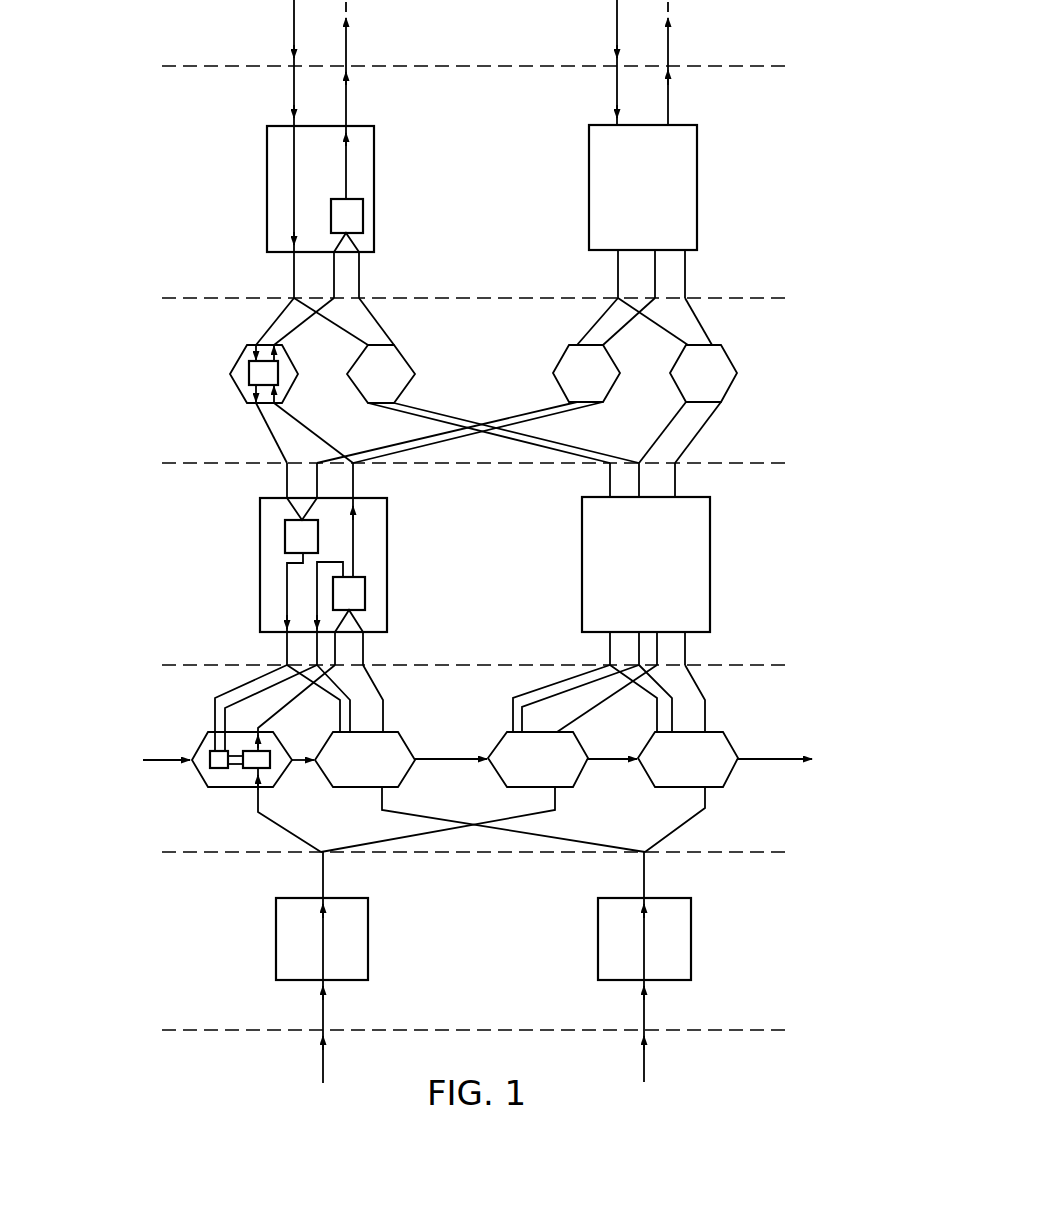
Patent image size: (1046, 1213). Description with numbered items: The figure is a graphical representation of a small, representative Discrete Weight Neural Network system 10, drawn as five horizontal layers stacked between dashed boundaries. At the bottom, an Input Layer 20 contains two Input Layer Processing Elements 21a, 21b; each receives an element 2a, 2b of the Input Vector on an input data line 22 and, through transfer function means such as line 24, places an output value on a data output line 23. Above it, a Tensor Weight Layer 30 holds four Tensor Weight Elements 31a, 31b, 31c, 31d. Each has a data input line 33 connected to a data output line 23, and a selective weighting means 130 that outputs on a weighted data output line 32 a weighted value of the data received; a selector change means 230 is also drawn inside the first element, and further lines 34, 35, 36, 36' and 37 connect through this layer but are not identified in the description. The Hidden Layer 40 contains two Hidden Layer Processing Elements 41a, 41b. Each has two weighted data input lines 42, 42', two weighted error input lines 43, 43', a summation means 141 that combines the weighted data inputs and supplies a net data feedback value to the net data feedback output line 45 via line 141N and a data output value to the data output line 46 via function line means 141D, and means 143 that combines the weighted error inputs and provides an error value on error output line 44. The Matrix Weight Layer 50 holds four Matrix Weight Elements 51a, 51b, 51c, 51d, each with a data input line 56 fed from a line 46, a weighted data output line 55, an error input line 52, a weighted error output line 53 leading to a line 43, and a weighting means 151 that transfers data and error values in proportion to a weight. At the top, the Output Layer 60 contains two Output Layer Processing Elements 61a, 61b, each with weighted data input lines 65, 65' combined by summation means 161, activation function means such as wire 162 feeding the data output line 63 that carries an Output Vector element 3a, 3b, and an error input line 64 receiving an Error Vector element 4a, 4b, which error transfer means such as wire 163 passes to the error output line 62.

The Discrete Weight Neural Network system 10 is at (236, 1033).
The Input Layer 20 is at (755, 937).
The Input Layer Processing Element 21a is at (272, 963).
The Input Layer Processing Element 21b is at (594, 952).
The input data line 22 is at (323, 1007).
The data output line 23 is at (318, 882).
The transfer function means 24 is at (327, 943).
The Input Vector element 2a is at (323, 1070).
The Input Vector element 2b is at (644, 1060).
The Tensor Weight Layer 30 is at (773, 783).
The Tensor Weight Element 31a is at (197, 777).
The Tensor Weight Element 31b is at (416, 745).
The Tensor Weight Element 31c is at (583, 738).
The Tensor Weight Element 31d is at (673, 790).
The weighted data output line 32 is at (300, 697).
The data input line 33 is at (282, 830).
The hidden layer output line to tensor weight element 34 is at (248, 682).
The hidden layer output line to tensor weight element 35 is at (222, 717).
The tensor weight layer input line 36 is at (166, 776).
The tensor weight element interconnect line 36' is at (464, 799).
The tensor weight layer output line 37 is at (775, 755).
The selective weighting means 130 is at (272, 762).
The selector change means 230 is at (222, 769).
The Hidden Layer 40 is at (752, 577).
The Hidden Layer Processing Element 41a is at (257, 582).
The Hidden Layer Processing Element 41b is at (578, 528).
The weighted data input line 42 is at (381, 637).
The weighted data input line 42' is at (412, 648).
The weighted error input line 43 is at (245, 480).
The weighted error input line 43' is at (267, 488).
The error output line 44 is at (287, 637).
The net data feedback output line 45 is at (316, 648).
The data output line 46 is at (358, 480).
The summation means 141 is at (366, 583).
The function line means 141D is at (355, 530).
The net data feedback line 141N is at (333, 558).
The error combining means 143 is at (285, 537).
The Matrix Weight Layer 50 is at (768, 376).
The Matrix Weight Element 51a is at (238, 353).
The Matrix Weight Element 51b is at (412, 358).
The Matrix Weight Element 51c is at (549, 367).
The Matrix Weight Element 51d is at (734, 350).
The error input line 52 is at (273, 316).
The weighted error output line 53 is at (273, 440).
The weighted data output line 55 is at (299, 324).
The data input line 56 is at (310, 428).
The weighting means 151 is at (249, 378).
The Output Layer 60 is at (732, 190).
The Output Layer Processing Element 61a is at (262, 190).
The Output Layer Processing Element 61b is at (585, 191).
The error output line 62 is at (294, 268).
The data output line 63 is at (347, 105).
The error input line 64 is at (294, 96).
The weighted data input line 65 is at (278, 275).
The weighted data input line 65' is at (398, 271).
The summation means 161 is at (364, 216).
The activation function means 162 is at (347, 160).
The error transfer means 163 is at (293, 153).
The Output Vector element 3a is at (347, 35).
The Output Vector element 3b is at (668, 33).
The Error Vector element 4a is at (293, 43).
The Error Vector element 4b is at (617, 30).